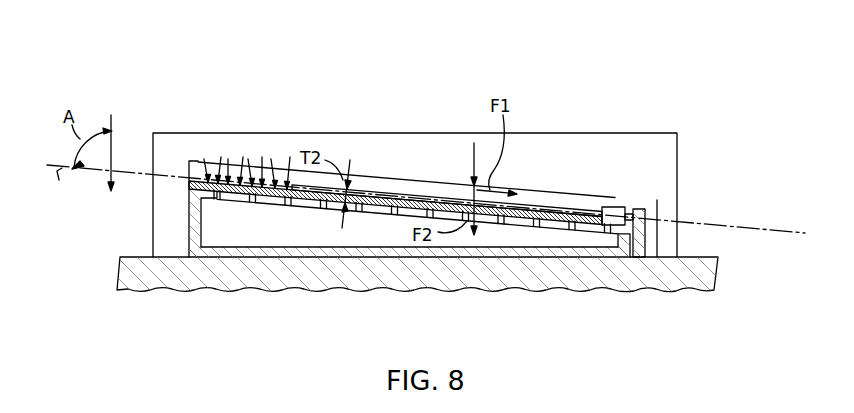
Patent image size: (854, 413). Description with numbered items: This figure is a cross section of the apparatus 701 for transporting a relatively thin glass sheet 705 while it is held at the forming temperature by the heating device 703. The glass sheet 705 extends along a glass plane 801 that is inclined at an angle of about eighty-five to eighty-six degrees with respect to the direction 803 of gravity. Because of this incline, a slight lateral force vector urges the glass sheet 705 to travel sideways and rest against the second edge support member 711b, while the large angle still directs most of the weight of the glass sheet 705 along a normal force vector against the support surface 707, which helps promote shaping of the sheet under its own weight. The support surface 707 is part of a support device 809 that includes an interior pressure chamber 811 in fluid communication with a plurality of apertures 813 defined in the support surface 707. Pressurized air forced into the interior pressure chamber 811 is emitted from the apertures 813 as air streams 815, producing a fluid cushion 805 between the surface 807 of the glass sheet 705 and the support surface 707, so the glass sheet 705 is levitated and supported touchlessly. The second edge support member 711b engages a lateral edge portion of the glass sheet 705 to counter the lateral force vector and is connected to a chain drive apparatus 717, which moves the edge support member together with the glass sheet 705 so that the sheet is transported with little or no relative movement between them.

The apparatus 701 is at (592, 103).
The heating device 703 is at (633, 133).
The glass sheet 705 is at (577, 208).
The support surface 707 is at (384, 188).
The second edge support member 711b is at (617, 205).
The chain drive apparatus 717 is at (643, 209).
The glass plane 801 is at (60, 170).
The direction of gravity 803 is at (108, 182).
The fluid cushion 805 is at (522, 211).
The surface of the glass sheet 807 is at (502, 217).
The support device 809 is at (163, 273).
The interior pressure chamber 811 is at (265, 232).
The apertures 813 is at (216, 200).
The air streams 815 is at (208, 174).